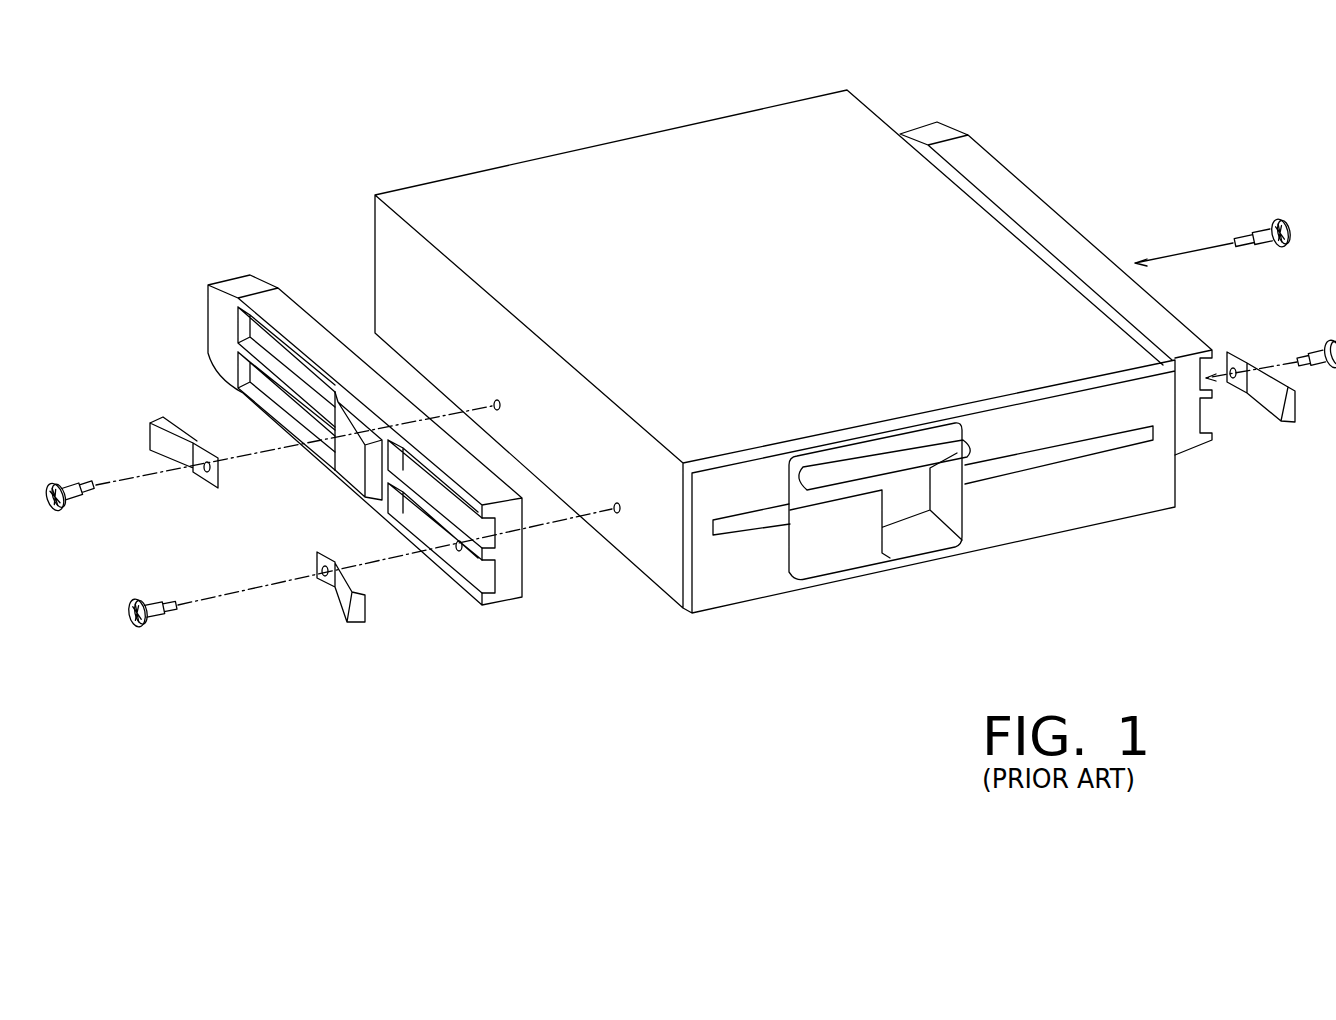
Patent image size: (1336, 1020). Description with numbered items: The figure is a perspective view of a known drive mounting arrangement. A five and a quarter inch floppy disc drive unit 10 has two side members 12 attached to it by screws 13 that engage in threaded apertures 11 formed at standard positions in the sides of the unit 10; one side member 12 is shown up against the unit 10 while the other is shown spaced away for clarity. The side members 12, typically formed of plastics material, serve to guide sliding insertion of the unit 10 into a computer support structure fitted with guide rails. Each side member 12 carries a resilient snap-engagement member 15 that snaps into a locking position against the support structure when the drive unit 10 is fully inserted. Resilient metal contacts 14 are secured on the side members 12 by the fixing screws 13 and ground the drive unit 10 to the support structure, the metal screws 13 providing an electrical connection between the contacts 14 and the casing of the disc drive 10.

The drive unit 10 is at (665, 137).
The threaded apertures 11 is at (612, 505).
The side members 12 is at (1230, 494).
The screws 13 is at (80, 497).
The resilient metal contacts 14 is at (317, 557).
The resilient snap-engagement member 15 is at (352, 452).